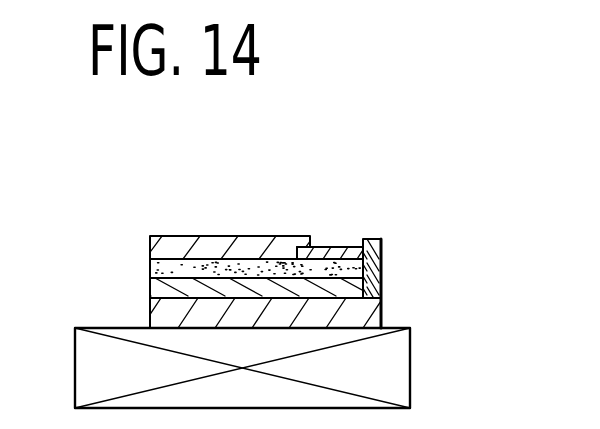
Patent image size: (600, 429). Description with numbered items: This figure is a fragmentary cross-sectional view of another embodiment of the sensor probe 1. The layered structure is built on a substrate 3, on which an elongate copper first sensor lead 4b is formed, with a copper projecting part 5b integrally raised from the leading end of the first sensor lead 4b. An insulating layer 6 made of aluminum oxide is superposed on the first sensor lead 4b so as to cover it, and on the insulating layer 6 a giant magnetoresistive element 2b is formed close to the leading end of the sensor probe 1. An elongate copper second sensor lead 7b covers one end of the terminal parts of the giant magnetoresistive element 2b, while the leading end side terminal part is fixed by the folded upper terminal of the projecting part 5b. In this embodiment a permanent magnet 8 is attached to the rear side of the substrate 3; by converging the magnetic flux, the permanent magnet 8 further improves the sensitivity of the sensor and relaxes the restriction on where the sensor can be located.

The sensor probe 1 is at (210, 228).
The giant magnetoresistive element 2b is at (322, 247).
The substrate 3 is at (150, 318).
The first sensor lead 4b is at (382, 285).
The projecting part 5b is at (382, 246).
The insulating layer 6 is at (150, 269).
The second sensor lead 7b is at (165, 236).
The permanent magnet 8 is at (410, 380).